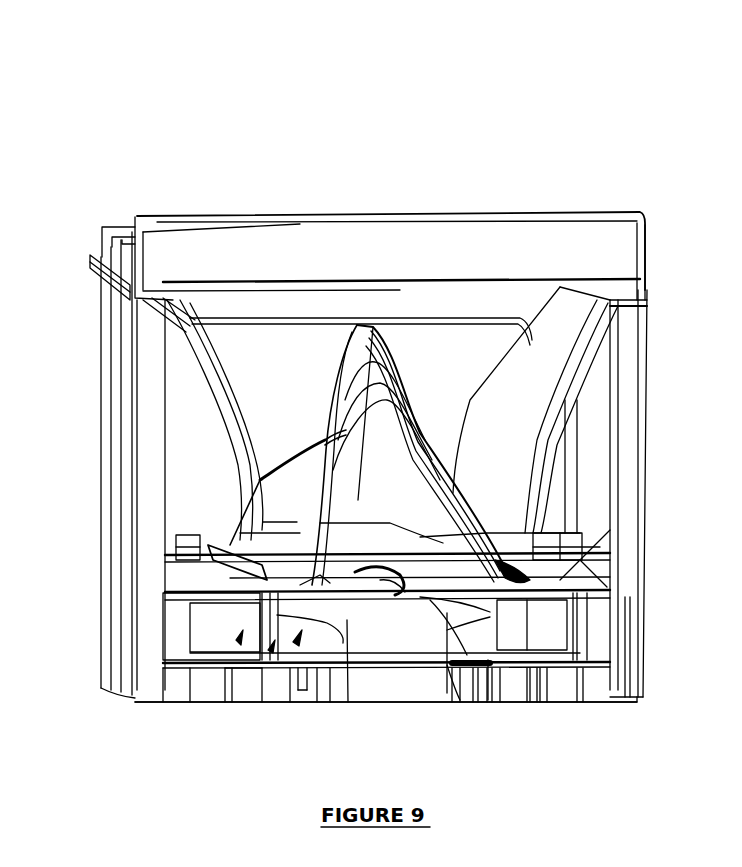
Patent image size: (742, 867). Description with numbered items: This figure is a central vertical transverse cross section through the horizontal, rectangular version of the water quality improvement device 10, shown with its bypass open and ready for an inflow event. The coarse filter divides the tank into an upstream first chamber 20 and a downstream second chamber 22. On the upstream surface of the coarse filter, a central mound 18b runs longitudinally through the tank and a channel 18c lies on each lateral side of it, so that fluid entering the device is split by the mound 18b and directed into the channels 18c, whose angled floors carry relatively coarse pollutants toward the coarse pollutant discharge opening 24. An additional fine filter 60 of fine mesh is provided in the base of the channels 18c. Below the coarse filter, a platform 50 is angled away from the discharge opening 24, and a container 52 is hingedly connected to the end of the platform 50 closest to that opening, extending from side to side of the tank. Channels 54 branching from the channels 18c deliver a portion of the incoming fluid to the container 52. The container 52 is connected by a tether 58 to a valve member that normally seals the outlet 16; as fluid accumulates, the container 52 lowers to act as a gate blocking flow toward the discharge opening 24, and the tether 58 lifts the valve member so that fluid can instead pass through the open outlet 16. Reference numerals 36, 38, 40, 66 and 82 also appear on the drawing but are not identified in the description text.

The water quality improvement device 10 is at (578, 141).
The outlet 16 is at (395, 690).
The central mound 18b is at (350, 363).
The channel 18c is at (292, 392).
The first region/chamber 20 is at (453, 418).
The second region/chamber 22 is at (330, 583).
The coarse pollutant discharge opening 24 is at (202, 548).
The support member 36 is at (273, 648).
The support member 38 is at (297, 640).
The mounting block 40 is at (487, 530).
The platform 50 is at (553, 583).
The container 52 is at (553, 665).
The channels 54 is at (212, 600).
The tether 58 is at (413, 595).
The additional fine filter 60 is at (285, 535).
The tray 66 is at (348, 640).
The lower member 82 is at (453, 700).